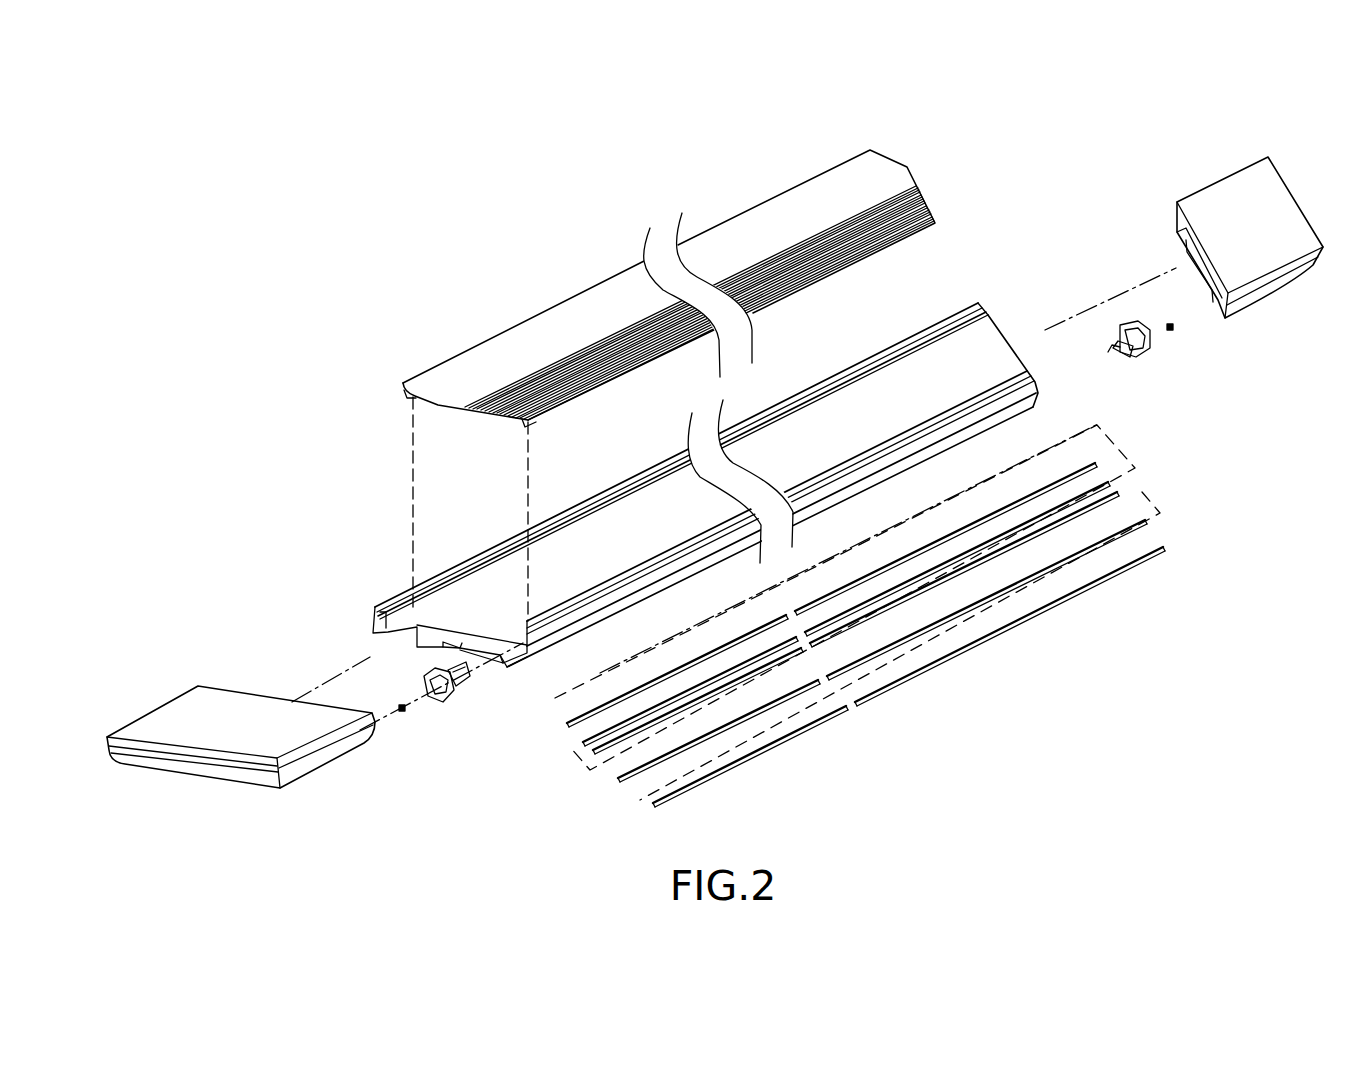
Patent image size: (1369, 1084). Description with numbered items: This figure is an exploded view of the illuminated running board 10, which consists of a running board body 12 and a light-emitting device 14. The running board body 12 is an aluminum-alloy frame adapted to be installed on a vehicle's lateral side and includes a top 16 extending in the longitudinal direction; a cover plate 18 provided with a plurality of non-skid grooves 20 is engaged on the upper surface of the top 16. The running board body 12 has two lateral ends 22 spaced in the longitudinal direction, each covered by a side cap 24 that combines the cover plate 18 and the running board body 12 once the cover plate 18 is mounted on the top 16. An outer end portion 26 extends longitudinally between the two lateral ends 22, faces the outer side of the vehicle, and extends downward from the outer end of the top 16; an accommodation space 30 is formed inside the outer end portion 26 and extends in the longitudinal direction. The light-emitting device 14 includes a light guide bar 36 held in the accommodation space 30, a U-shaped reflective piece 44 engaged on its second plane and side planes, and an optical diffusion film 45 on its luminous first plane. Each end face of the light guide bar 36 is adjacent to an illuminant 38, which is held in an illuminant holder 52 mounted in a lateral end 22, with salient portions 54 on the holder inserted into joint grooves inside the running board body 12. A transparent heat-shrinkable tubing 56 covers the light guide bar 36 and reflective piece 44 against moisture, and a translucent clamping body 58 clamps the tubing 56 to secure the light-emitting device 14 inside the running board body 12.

The illuminated running board 10 is at (286, 229).
The running board body 12 is at (655, 525).
The light-emitting device 14 is at (582, 793).
The top 16 is at (897, 405).
The cover plate 18 is at (512, 345).
The non-skid grooves 20 is at (803, 245).
The lateral ends 22 is at (462, 597).
The side cap 24 is at (193, 745).
The outer end portion 26 is at (598, 606).
The accommodation space 30 is at (480, 670).
The light guide bar 36 is at (1110, 482).
The illuminant 38 is at (402, 713).
The reflective piece 44 is at (998, 493).
The optical diffusion film 45 is at (600, 752).
The illuminant holder 52 is at (447, 700).
The salient portions 54 is at (467, 710).
The heat-shrinkable tubing 56 is at (1145, 522).
The clamping body 58 is at (1013, 630).